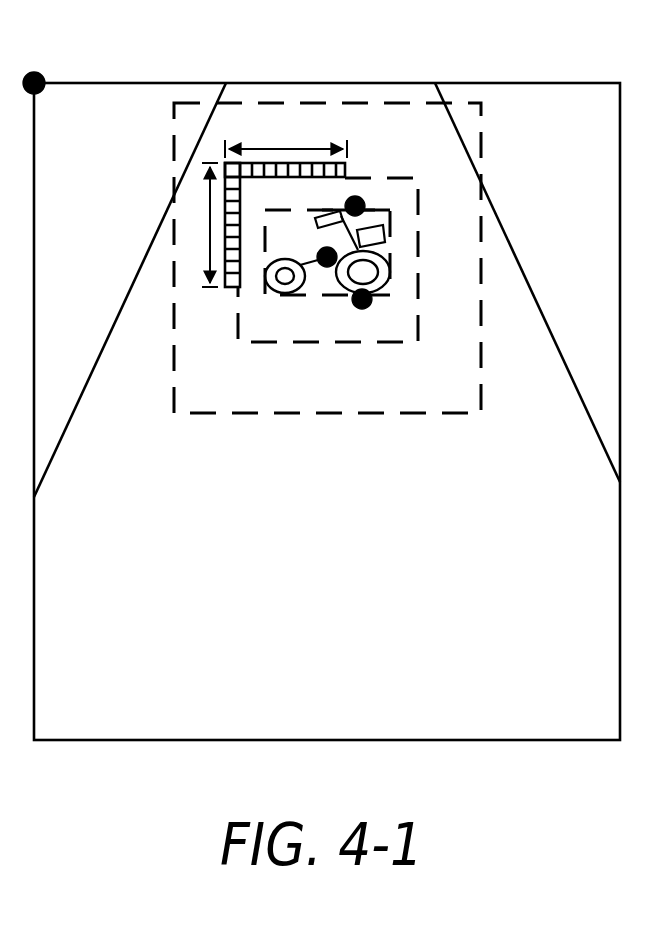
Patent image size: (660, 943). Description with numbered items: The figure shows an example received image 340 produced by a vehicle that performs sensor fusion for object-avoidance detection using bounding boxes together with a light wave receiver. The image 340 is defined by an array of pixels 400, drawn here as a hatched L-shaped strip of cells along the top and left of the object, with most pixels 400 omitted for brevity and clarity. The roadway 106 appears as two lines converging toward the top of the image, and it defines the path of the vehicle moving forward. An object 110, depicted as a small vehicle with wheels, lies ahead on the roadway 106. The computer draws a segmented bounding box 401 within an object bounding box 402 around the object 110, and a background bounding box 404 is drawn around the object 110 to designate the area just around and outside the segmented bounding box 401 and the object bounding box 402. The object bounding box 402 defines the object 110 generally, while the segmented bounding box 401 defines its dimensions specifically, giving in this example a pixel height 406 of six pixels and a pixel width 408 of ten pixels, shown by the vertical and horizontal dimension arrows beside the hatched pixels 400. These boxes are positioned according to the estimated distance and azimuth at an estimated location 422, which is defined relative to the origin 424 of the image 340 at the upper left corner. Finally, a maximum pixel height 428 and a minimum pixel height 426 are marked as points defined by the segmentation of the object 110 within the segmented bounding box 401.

The roadway 106 is at (127, 293).
The object 110 is at (338, 241).
The image 340 is at (337, 74).
The pixels 400 is at (346, 172).
The segmented bounding box 401 is at (273, 296).
The object bounding box 402 is at (331, 342).
The background bounding box 404 is at (300, 414).
The pixel height 406 is at (208, 252).
The pixel width 408 is at (298, 147).
The estimated location 422 is at (325, 266).
The origin 424 is at (36, 72).
The minimum pixel height 426 is at (362, 308).
The maximum pixel height 428 is at (366, 203).